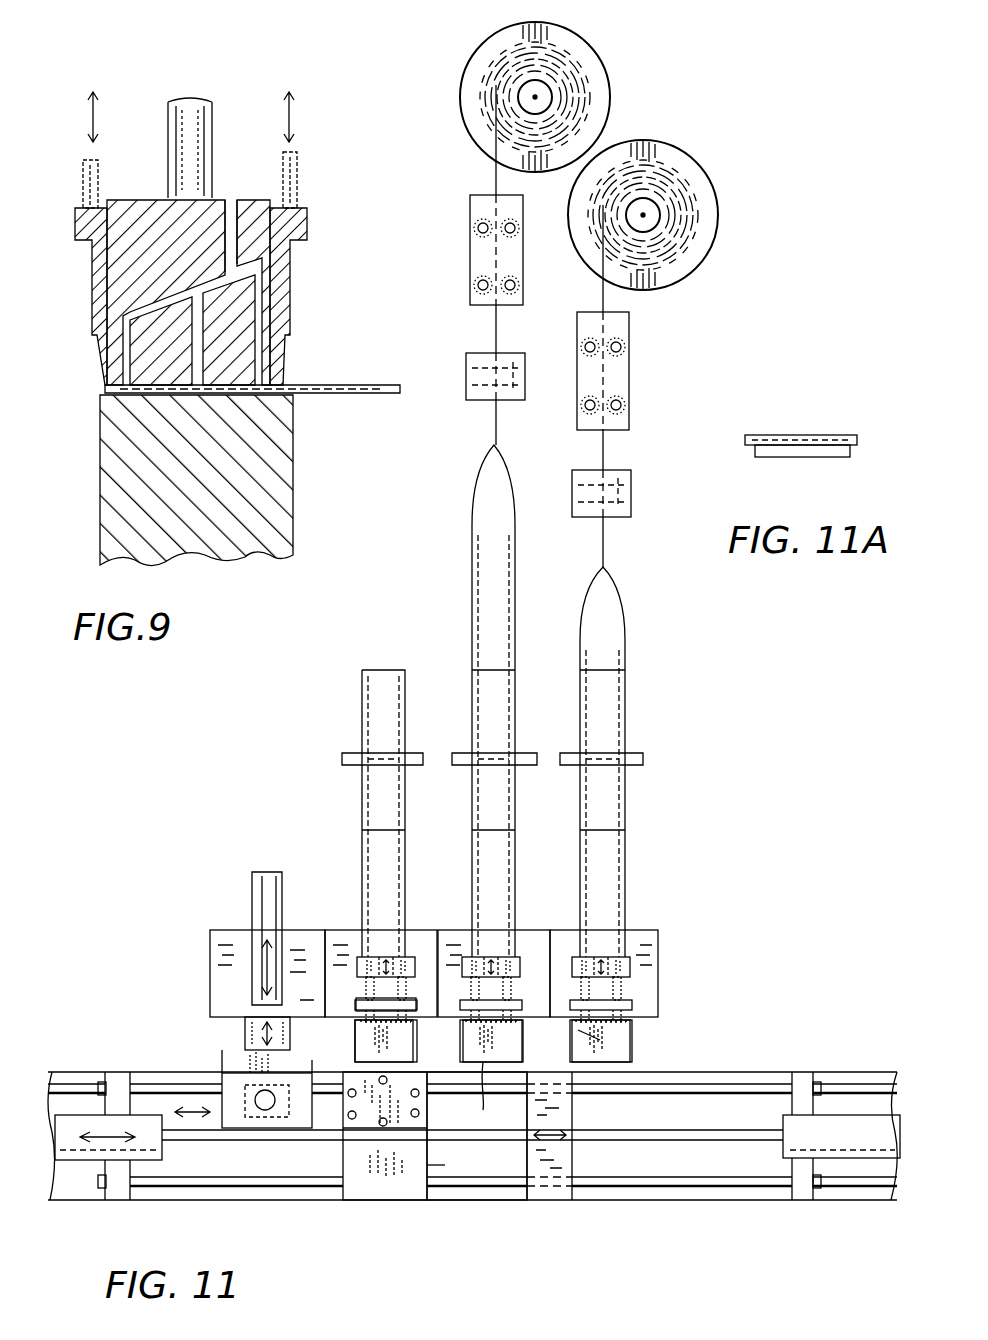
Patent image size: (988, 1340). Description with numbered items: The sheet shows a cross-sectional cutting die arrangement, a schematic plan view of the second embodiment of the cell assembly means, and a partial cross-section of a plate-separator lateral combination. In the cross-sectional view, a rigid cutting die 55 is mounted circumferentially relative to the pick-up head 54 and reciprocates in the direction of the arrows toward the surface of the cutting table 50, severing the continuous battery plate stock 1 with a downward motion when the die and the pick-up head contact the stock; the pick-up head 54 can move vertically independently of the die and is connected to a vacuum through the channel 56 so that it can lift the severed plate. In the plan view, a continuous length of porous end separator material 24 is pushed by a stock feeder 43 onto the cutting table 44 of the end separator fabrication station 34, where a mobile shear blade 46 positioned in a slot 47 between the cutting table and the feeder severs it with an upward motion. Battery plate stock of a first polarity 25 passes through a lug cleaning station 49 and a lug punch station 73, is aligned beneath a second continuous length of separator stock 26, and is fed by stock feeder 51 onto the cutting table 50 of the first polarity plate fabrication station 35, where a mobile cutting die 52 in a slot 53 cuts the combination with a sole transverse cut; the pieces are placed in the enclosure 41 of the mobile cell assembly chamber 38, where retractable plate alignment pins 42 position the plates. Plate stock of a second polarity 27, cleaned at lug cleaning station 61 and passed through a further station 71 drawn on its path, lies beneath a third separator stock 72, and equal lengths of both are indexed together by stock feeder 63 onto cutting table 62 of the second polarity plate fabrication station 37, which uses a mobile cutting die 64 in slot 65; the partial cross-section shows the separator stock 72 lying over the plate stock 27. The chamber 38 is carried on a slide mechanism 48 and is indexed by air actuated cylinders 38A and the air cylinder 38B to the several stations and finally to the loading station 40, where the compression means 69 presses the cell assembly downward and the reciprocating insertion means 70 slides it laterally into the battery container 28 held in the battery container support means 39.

In FIG. 9, the battery plate stock 1 is at (350, 380).
In FIG. 11, the end separator material 24 is at (360, 702).
In FIG. 11, the battery plate stock of a first polarity 25 is at (598, 65).
In FIG. 11, the intermediate separator material 26 is at (519, 693).
In FIG. 11A, the battery plate stock of a second polarity 27 is at (820, 452).
In FIG. 11, the battery plate stock of a second polarity 27 is at (705, 180).
In FIG. 11, the battery container 28 is at (392, 1214).
In FIG. 11, the end separator fabrication station 34 is at (337, 918).
In FIG. 11, the first polarity plate fabrication station 35 is at (533, 925).
In FIG. 11, the second polarity plate fabrication station 37 is at (649, 926).
In FIG. 11, the mobile cell assembly chamber 38 is at (425, 1128).
In FIG. 11, the air actuated cylinders 38A is at (845, 1118).
In FIG. 11, the air cylinder 38B is at (80, 1115).
In FIG. 11, the battery container support means 39 is at (436, 1171).
In FIG. 11, the battery container loading station 40 is at (215, 918).
In FIG. 11, the enclosure 41 is at (413, 1079).
In FIG. 11, the plate alignment pins 42 is at (349, 1097).
In FIG. 11, the stock feeder 43 is at (408, 958).
In FIG. 11, the cutting table 44 is at (358, 1050).
In FIG. 11, the mobile shear blade 46 is at (365, 1024).
In FIG. 11, the slot 47 is at (398, 1025).
In FIG. 11, the slide mechanism 48 is at (665, 1188).
In FIG. 11, the lug cleaning station 49 is at (470, 258).
In FIG. 9, the cutting table 50 is at (283, 513).
In FIG. 11, the cutting table 50 is at (504, 1095).
In FIG. 11, the stock feeder 51 is at (470, 957).
In FIG. 11, the mobile cutting die 52 is at (495, 1023).
In FIG. 11, the slot 53 is at (503, 1040).
In FIG. 9, the pick-up head 54 is at (258, 210).
In FIG. 9, the rigid cutting die 55 is at (316, 233).
In FIG. 9, the channel 56 is at (231, 206).
In FIG. 11, the lug cleaning station 61 is at (629, 329).
In FIG. 11, the cutting table 62 is at (638, 1044).
In FIG. 11, the stock feeder 63 is at (636, 965).
In FIG. 11, the mobile cutting die 64 is at (615, 1023).
In FIG. 11, the slot 65 is at (605, 1040).
In FIG. 11, the compression means 69 is at (247, 1077).
In FIG. 11, the reciprocating insertion means 70 is at (248, 1032).
In FIG. 11, the strip guide 71 is at (622, 470).
In FIG. 11A, the third separator stock 72 is at (787, 424).
In FIG. 11, the third separator stock 72 is at (635, 703).
In FIG. 11, the lug punch station 73 is at (466, 364).